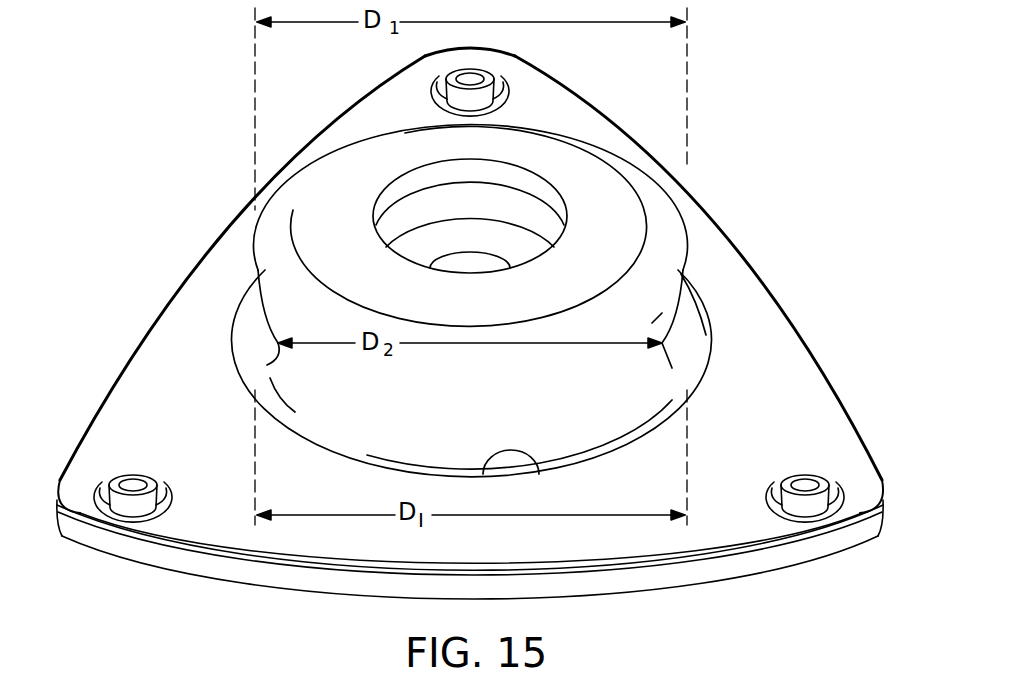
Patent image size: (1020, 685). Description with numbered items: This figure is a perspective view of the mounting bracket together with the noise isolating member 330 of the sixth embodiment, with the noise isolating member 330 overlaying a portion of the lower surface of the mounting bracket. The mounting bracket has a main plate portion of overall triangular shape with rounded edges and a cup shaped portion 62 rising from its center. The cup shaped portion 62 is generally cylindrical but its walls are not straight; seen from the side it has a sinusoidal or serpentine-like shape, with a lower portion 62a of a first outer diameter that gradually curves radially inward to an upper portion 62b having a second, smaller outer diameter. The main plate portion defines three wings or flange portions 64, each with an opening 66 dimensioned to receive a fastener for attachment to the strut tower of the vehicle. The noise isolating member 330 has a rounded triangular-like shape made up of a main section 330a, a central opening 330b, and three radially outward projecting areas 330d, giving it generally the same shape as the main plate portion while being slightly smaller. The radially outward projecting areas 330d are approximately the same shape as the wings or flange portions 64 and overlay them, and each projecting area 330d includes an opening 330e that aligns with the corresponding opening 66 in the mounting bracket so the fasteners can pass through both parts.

The noise isolating member 330 is at (172, 285).
The main section 330a is at (315, 537).
The central opening 330b is at (545, 462).
The radially outward projecting area 330d is at (428, 67).
The opening 330e is at (435, 84).
The cup shaped portion 62 is at (658, 205).
The lower portion 62a is at (685, 270).
The upper portion 62b is at (663, 343).
The wing or flange portion 64 is at (72, 543).
The opening 66 is at (472, 80).